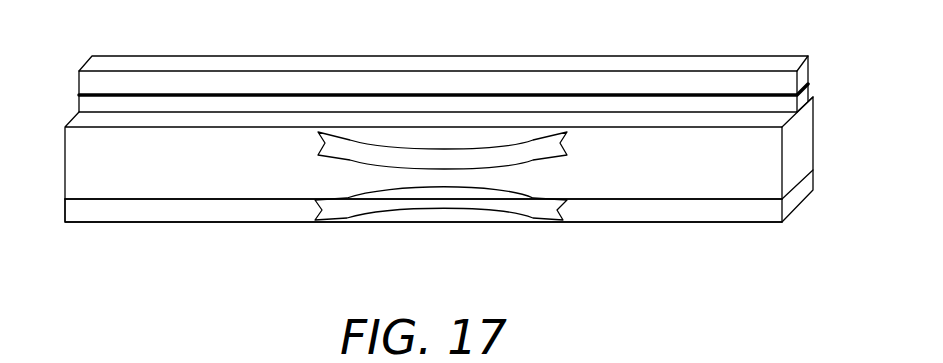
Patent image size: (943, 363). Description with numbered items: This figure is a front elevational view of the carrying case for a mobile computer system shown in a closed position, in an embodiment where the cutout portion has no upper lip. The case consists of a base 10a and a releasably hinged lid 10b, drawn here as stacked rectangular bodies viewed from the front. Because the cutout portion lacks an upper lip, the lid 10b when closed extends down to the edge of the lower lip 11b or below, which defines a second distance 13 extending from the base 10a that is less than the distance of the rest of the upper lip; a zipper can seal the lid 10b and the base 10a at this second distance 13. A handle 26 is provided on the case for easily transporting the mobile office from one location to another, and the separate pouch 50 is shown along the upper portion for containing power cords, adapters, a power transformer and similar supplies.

The base 10a is at (133, 222).
The releasably hinged lid 10b is at (83, 155).
The lower lip 11b is at (237, 210).
The second distance 13 is at (277, 199).
The handle 26 is at (452, 160).
The separate pouch 50 is at (810, 65).